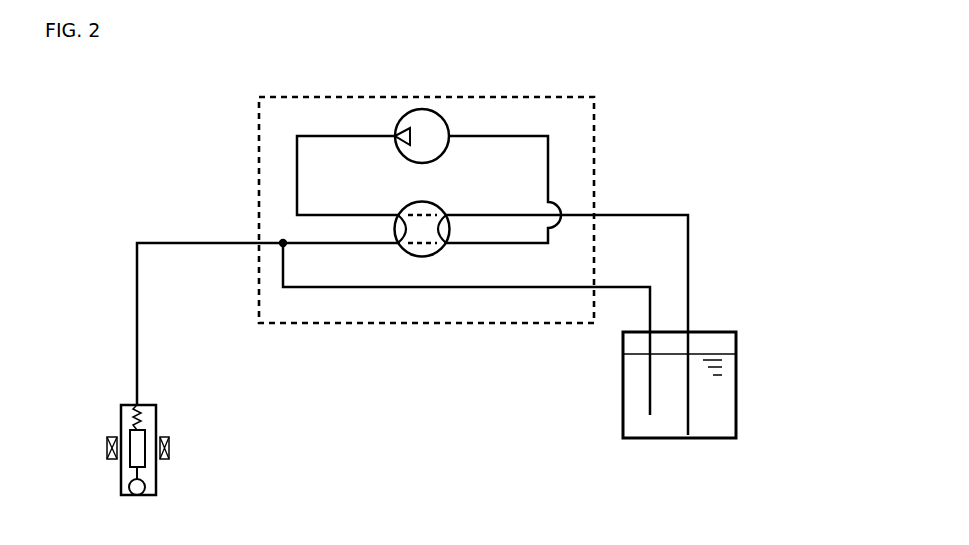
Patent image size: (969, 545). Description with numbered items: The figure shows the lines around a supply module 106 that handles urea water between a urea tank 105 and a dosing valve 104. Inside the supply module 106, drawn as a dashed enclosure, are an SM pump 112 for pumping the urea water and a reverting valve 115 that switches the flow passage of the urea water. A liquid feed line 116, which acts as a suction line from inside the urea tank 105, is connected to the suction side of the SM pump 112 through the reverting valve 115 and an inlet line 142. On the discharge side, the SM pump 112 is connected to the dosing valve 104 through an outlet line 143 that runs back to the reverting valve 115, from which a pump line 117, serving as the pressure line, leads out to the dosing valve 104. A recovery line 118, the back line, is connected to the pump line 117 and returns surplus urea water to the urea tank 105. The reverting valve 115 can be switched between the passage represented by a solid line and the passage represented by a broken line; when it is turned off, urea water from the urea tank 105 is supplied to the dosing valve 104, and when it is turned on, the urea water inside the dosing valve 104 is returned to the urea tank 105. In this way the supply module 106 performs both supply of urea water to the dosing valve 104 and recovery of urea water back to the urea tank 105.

The dosing valve 104 is at (163, 418).
The urea tank 105 is at (720, 331).
The supply module 106 is at (534, 96).
The SM pump 112 is at (423, 112).
The reverting valve 115 is at (422, 204).
The liquid feed line 116 is at (680, 213).
The pump line 117 is at (152, 242).
The recovery line 118 is at (610, 287).
The inlet line 142 is at (550, 152).
The outlet line 143 is at (297, 162).